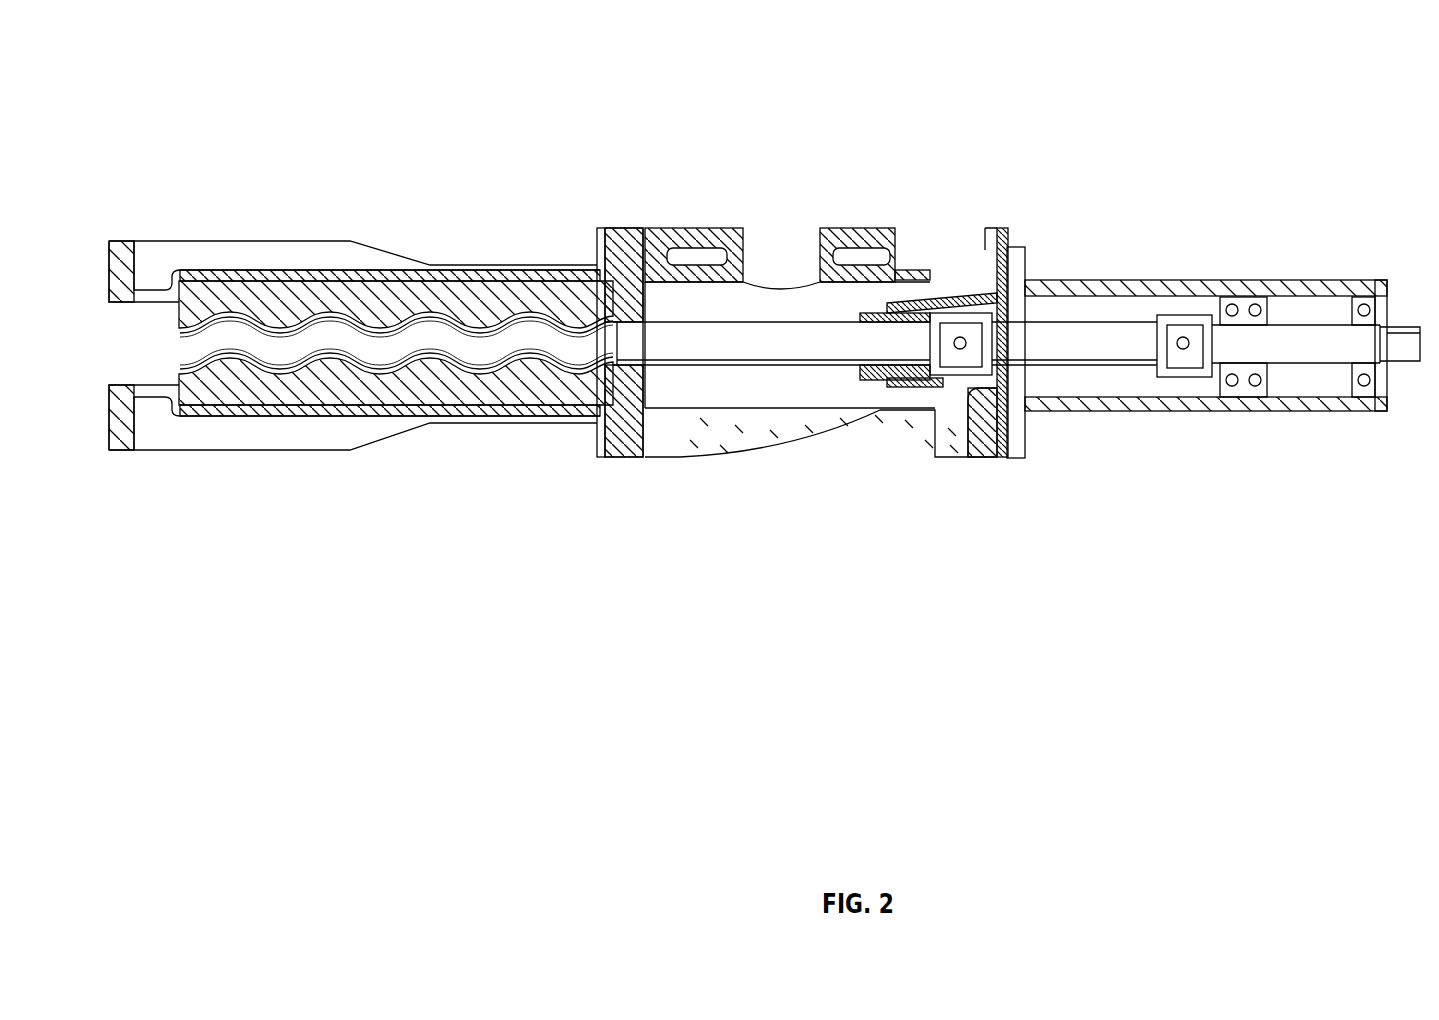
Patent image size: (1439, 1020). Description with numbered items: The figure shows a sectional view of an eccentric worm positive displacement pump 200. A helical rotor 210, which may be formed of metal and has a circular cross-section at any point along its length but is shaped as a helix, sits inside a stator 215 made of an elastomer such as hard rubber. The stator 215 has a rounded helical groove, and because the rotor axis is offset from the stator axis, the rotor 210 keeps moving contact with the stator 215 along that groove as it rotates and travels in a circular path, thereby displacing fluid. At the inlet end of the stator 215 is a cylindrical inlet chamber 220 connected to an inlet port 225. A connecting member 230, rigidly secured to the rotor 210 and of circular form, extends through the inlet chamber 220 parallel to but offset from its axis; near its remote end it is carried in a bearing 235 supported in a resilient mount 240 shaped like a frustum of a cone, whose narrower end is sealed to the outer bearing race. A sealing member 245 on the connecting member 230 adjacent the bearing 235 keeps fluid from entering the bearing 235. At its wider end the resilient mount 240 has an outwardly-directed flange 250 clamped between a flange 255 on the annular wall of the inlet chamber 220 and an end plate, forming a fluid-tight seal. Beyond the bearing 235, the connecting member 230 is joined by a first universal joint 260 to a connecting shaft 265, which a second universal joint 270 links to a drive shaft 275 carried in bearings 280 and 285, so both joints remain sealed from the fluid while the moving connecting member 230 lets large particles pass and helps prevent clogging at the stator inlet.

The eccentric worm positive displacement pump 200 is at (222, 70).
The helical rotor 210 is at (463, 345).
The stator 215 is at (432, 280).
The inlet chamber 220 is at (667, 290).
The inlet port 225 is at (778, 248).
The connecting member 230 is at (678, 347).
The bearing 235 is at (900, 387).
The resilient mount 240 is at (935, 292).
The sealing member 245 is at (862, 378).
The outwardly-directed flange 250 is at (1007, 238).
The flange 255 is at (990, 230).
The first universal joint 260 is at (945, 473).
The connecting shaft 265 is at (1100, 348).
The second universal joint 270 is at (1180, 327).
The drive shaft 275 is at (1298, 327).
The bearing 280 is at (1242, 387).
The bearing 285 is at (1363, 392).